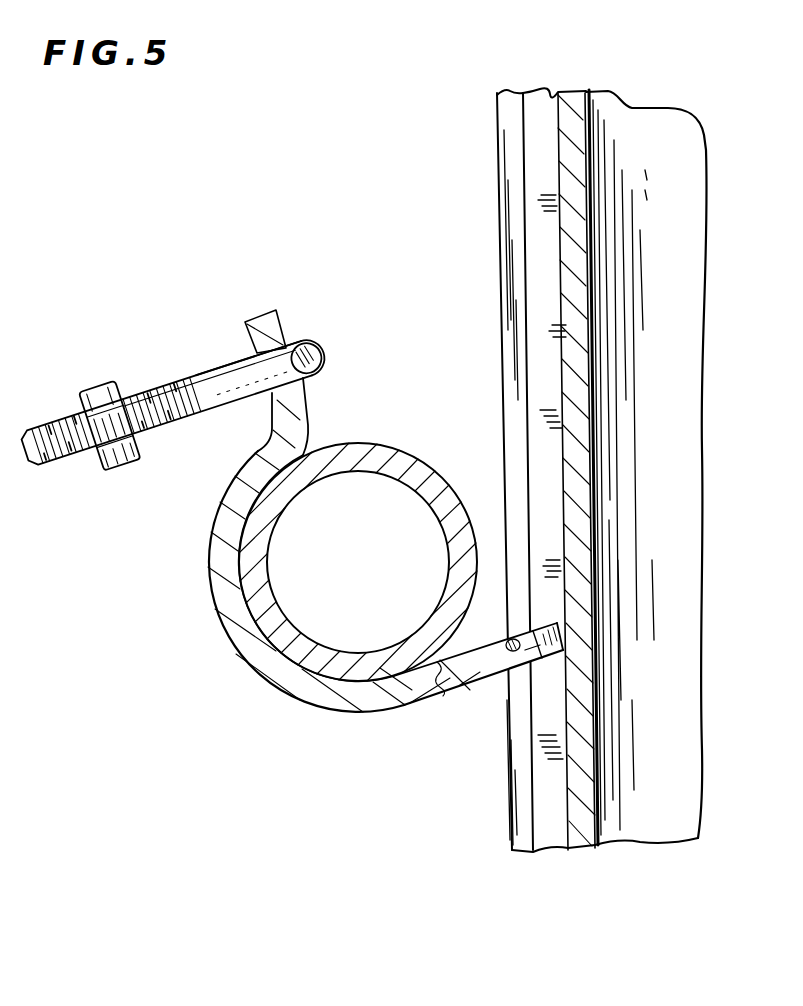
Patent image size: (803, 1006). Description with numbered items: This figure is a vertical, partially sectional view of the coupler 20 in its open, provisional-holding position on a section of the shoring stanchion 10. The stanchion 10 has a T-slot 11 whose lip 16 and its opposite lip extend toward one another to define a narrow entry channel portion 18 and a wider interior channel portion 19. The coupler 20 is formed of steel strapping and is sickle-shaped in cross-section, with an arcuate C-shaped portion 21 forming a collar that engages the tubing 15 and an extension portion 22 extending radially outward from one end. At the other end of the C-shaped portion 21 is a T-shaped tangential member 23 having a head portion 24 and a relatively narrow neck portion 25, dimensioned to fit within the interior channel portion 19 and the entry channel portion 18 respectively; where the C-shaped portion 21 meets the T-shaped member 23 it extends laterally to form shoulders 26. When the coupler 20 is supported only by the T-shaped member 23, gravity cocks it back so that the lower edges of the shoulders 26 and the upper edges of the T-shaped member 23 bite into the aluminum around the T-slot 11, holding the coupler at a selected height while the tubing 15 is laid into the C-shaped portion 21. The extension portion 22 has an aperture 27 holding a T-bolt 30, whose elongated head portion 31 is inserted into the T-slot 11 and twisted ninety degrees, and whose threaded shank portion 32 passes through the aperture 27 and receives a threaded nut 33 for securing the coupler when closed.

The shoring stanchion 10 is at (687, 187).
The T-slot 11 is at (538, 84).
The tubing 15 is at (420, 478).
The lip 16 is at (510, 310).
The entry channel portion 18 is at (522, 360).
The interior channel portion 19 is at (553, 243).
The coupler 20 is at (206, 612).
The C-shaped portion 21 is at (265, 672).
The extension portion 22 is at (302, 411).
The T-shaped tangential member 23 is at (480, 689).
The head portion 24 is at (553, 628).
The neck portion 25 is at (530, 660).
The shoulders 26 is at (514, 638).
The aperture 27 is at (289, 341).
The T-bolt 30 is at (195, 425).
The elongated head portion 31 is at (320, 360).
The threaded shank portion 32 is at (199, 386).
The threaded nut 33 is at (100, 387).